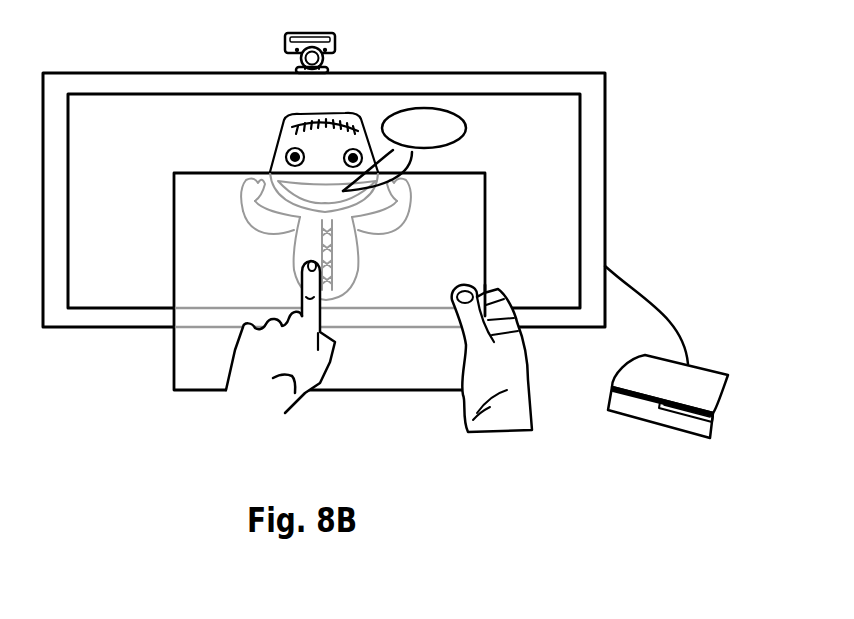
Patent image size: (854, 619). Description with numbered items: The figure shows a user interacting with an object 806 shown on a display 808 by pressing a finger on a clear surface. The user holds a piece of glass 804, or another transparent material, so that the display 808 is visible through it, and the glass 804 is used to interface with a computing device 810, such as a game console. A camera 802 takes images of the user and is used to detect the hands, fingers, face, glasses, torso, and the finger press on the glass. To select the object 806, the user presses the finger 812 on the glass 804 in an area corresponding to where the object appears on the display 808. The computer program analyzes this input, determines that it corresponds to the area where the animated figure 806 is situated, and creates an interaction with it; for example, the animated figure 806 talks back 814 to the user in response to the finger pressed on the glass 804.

The camera 802 is at (338, 52).
The glass 804 is at (190, 207).
The animated figure 806 is at (284, 136).
The display 808 is at (565, 153).
The computing device 810 is at (712, 378).
The finger 812 is at (290, 258).
The talk back 814 is at (462, 130).